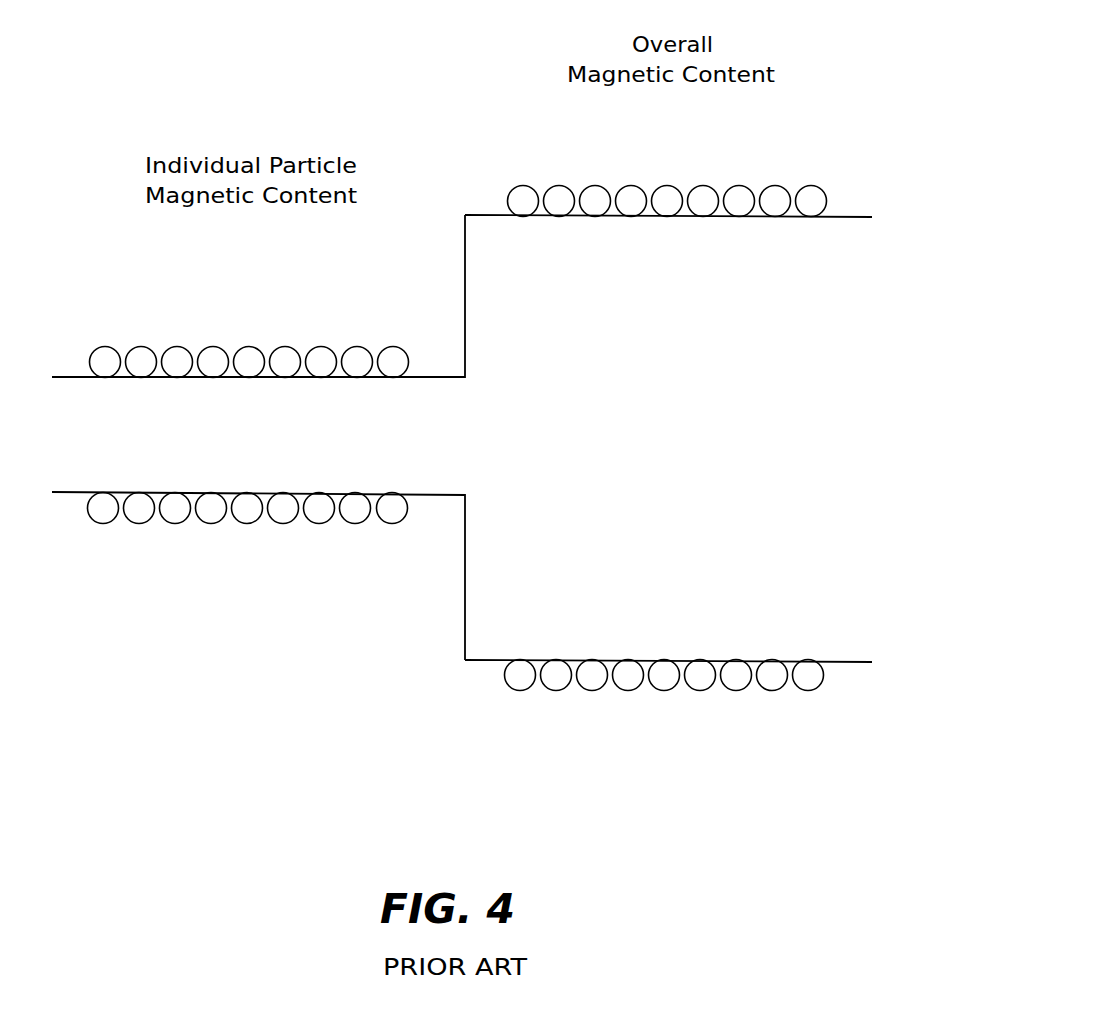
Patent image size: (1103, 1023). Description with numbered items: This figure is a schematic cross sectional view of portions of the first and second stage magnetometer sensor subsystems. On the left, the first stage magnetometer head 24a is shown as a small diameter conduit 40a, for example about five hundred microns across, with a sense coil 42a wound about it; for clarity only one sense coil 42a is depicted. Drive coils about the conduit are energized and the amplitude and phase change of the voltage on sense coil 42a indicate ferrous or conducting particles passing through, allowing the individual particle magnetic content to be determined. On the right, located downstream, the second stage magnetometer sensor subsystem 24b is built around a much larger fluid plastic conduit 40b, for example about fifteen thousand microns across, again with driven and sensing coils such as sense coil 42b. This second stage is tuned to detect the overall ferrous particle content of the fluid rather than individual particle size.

The conduit 40a is at (282, 451).
The fluid plastic conduit 40b is at (690, 451).
The sense coil 42a is at (212, 346).
The sense coil 42b is at (631, 186).
The first stage magnetometer head 24a is at (247, 572).
The second stage magnetometer sensor subsystem 24b is at (667, 728).